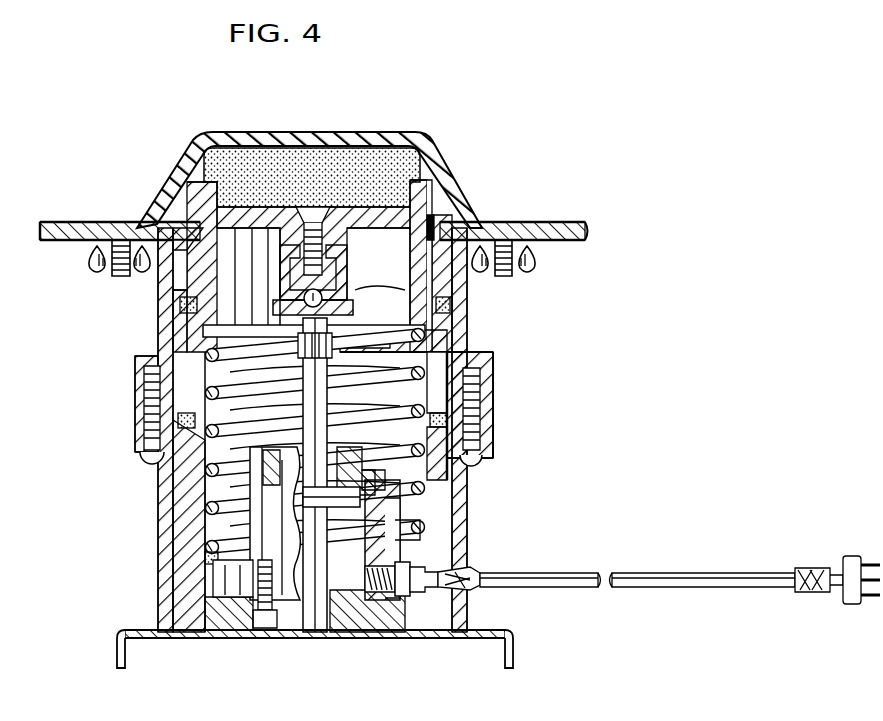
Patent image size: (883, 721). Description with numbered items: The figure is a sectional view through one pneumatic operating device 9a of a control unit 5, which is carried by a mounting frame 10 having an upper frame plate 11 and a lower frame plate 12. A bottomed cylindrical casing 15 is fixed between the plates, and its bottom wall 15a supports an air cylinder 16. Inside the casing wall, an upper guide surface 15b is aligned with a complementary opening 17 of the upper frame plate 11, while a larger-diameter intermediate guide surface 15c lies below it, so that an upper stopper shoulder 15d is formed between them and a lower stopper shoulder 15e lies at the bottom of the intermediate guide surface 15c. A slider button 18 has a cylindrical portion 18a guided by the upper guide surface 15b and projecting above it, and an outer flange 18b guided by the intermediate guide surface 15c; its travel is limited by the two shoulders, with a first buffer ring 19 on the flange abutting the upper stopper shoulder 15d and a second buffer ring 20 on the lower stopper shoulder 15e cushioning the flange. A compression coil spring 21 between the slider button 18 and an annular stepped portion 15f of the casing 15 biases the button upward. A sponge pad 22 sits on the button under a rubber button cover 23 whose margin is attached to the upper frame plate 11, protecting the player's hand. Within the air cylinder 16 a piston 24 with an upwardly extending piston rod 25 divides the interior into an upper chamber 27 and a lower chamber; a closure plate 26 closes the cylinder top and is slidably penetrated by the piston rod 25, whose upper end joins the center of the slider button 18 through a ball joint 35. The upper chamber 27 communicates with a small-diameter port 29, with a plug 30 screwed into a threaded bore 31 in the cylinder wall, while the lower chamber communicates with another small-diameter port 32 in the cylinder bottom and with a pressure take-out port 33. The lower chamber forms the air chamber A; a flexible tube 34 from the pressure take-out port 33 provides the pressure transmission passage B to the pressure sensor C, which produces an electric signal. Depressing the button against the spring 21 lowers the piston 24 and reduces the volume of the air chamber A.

The control unit 5 is at (85, 200).
The pneumatic operating device 9a is at (188, 140).
The mounting frame 10 is at (590, 229).
The upper frame plate 11 is at (548, 232).
The lower frame plate 12 is at (450, 640).
The casing 15 is at (158, 336).
The bottom wall 15a is at (230, 620).
The upper guide surface 15b is at (200, 228).
The intermediate guide surface 15c is at (145, 360).
The upper stopper shoulder 15d is at (180, 312).
The lower stopper shoulder 15e is at (180, 413).
The annular stepped portion 15f is at (200, 555).
The air cylinder 16 is at (210, 520).
The opening 17 is at (432, 232).
The slider button 18 is at (272, 205).
The cylindrical portion 18a is at (175, 278).
The outer flange 18b is at (465, 350).
The first buffer ring 19 is at (450, 318).
The second buffer ring 20 is at (447, 430).
The compression coil spring 21 is at (210, 450).
The sponge pad 22 is at (352, 160).
The button cover 23 is at (322, 136).
The piston 24 is at (345, 590).
The piston rod 25 is at (175, 380).
The closure plate 26 is at (490, 400).
The upper chamber 27 is at (420, 458).
The port 29 is at (445, 495).
The plug 30 is at (420, 525).
The threaded bore 31 is at (420, 487).
The port 32 is at (318, 605).
The pressure take-out port 33 is at (375, 600).
The flexible tube 34 is at (588, 570).
The ball joint 35 is at (445, 298).
The air chamber A is at (287, 620).
The pressure transmission passage B is at (713, 568).
The pressure sensor C is at (855, 556).